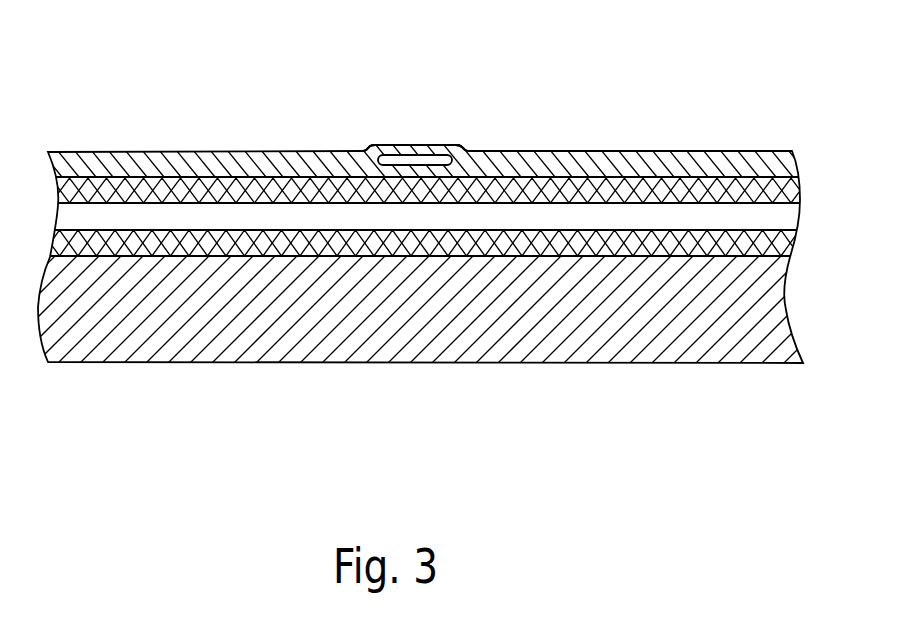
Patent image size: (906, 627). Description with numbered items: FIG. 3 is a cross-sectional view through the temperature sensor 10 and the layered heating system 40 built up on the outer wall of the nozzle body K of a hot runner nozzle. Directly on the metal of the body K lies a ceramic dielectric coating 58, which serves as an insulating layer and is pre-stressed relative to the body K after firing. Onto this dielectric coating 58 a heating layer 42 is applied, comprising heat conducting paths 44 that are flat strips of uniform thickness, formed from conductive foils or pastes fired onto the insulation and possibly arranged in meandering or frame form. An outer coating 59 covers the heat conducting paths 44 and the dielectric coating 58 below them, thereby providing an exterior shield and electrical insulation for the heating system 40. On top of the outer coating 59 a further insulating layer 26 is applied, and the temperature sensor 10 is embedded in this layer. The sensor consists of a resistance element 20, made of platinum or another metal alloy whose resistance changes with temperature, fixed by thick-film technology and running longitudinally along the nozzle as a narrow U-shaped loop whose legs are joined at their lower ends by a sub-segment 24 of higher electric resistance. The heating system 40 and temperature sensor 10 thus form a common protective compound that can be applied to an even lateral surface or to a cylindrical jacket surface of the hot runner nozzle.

The temperature sensor 10 is at (400, 159).
The resistance element 20 is at (394, 140).
The sub-segment 24 is at (430, 158).
The insulating layer 26 is at (230, 158).
The heating system 40 is at (533, 218).
The heating layer 42 is at (533, 218).
The heat conducting paths 44 is at (533, 218).
The dielectric coating 58 is at (612, 243).
The outer coating 59 is at (682, 192).
The body K is at (420, 322).